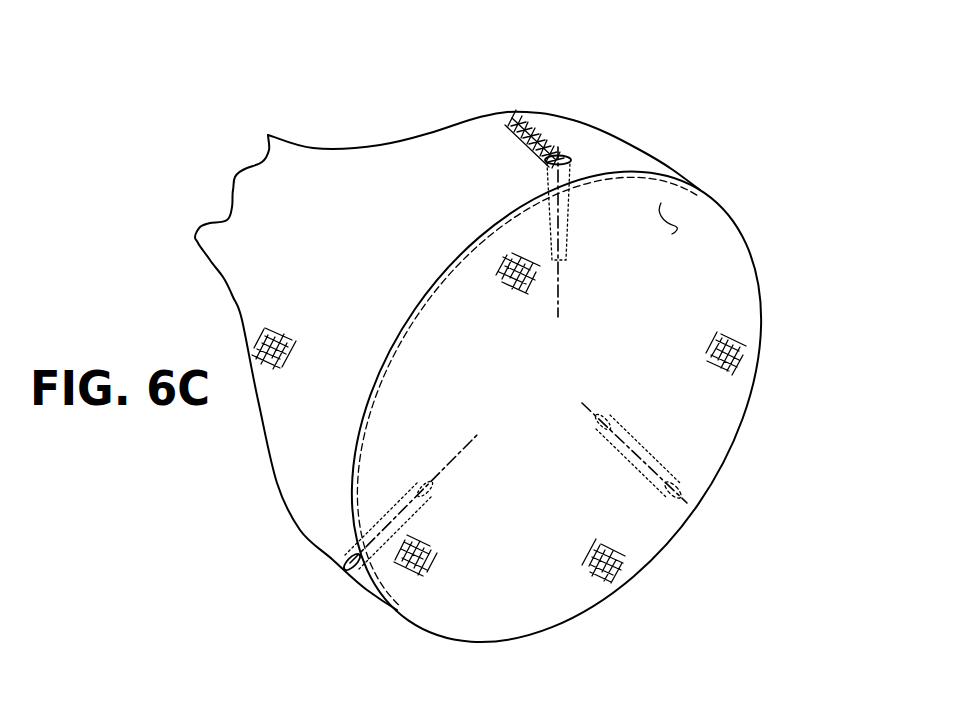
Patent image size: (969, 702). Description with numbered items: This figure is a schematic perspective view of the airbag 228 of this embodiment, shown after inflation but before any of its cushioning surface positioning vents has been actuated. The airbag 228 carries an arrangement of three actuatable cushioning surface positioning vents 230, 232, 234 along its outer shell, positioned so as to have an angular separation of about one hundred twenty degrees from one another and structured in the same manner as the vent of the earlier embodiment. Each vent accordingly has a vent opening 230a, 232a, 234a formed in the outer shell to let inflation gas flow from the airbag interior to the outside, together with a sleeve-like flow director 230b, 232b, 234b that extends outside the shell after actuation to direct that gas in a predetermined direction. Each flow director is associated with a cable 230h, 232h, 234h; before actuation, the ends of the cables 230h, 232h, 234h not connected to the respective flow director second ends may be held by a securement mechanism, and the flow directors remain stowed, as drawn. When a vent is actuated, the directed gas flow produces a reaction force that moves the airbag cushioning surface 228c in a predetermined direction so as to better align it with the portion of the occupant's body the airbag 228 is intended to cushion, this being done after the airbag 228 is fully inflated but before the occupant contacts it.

The airbag 228 is at (448, 180).
The rim opening 228c is at (676, 226).
The actuatable cushioning surface positioning vent 230 is at (553, 163).
The hole opening 230a is at (572, 160).
The hole wall 230b is at (550, 224).
The cable 230h is at (558, 303).
The actuatable cushioning surface positioning vent 232 is at (357, 575).
The hole opening 232a is at (343, 565).
The hole wall 232b is at (390, 515).
The cable 232h is at (457, 460).
The actuatable cushioning surface positioning vent 234 is at (627, 467).
The hole opening 234a is at (685, 488).
The hole wall 234b is at (641, 460).
The cable 234h is at (592, 411).